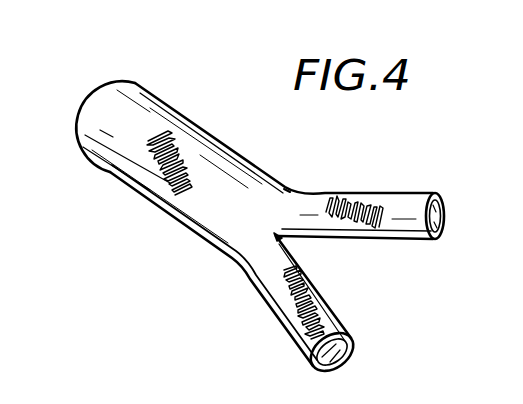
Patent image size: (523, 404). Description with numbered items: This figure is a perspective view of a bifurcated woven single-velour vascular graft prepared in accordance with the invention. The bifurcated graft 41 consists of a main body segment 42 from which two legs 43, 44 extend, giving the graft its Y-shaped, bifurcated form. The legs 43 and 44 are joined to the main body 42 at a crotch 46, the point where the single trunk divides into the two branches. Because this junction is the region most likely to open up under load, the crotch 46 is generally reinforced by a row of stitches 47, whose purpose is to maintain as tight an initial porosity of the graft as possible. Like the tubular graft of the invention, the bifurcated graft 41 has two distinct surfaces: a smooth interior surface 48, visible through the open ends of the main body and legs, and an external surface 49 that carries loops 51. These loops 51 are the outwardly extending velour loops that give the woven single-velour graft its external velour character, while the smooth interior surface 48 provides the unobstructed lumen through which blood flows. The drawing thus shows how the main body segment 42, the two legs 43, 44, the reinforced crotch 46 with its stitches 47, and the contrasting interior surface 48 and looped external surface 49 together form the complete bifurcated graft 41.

The bifurcated graft 41 is at (225, 125).
The main body segment 42 is at (111, 118).
The leg 43 is at (270, 281).
The leg 44 is at (386, 208).
The crotch 46 is at (280, 237).
The row of stitches 47 is at (278, 231).
The smooth interior surface 48 is at (446, 230).
The external surface 49 is at (252, 220).
The loops 51 is at (178, 185).